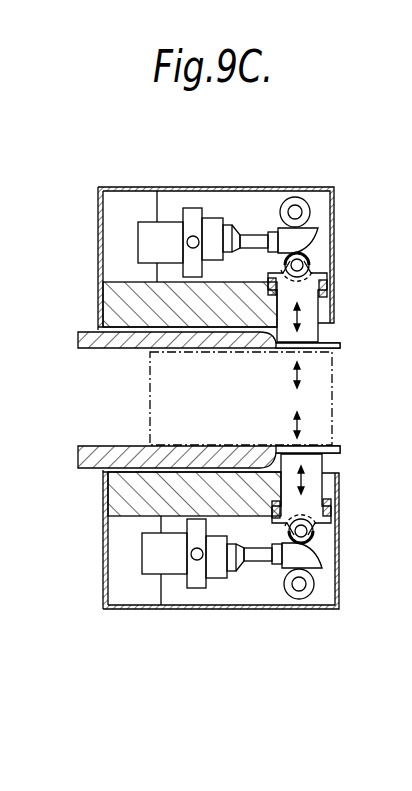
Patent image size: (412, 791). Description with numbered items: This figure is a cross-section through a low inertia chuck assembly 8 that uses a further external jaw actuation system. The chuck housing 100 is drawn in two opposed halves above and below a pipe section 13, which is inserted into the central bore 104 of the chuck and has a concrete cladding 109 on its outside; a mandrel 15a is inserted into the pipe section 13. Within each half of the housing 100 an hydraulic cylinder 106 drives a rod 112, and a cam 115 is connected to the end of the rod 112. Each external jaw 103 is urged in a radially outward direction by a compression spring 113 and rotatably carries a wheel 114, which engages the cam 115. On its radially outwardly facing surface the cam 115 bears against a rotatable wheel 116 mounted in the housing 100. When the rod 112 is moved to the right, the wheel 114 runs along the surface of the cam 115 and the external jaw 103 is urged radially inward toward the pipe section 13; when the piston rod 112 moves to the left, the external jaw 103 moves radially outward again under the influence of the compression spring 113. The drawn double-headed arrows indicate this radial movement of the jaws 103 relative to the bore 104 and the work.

The chuck assembly 8 is at (240, 138).
The chuck housing 100 is at (147, 187).
The hydraulic cylinder 106 is at (150, 244).
The concrete cladding 109 is at (88, 340).
The rod 112 is at (245, 238).
The rotatable wheel 116 is at (296, 200).
The cam 115 is at (303, 236).
The wheel 114 is at (309, 257).
The compression spring 113 is at (327, 282).
The external jaw 103 is at (303, 303).
The central bore 104 is at (318, 343).
The mandrel 15a is at (320, 416).
The pipe section 13 is at (338, 449).